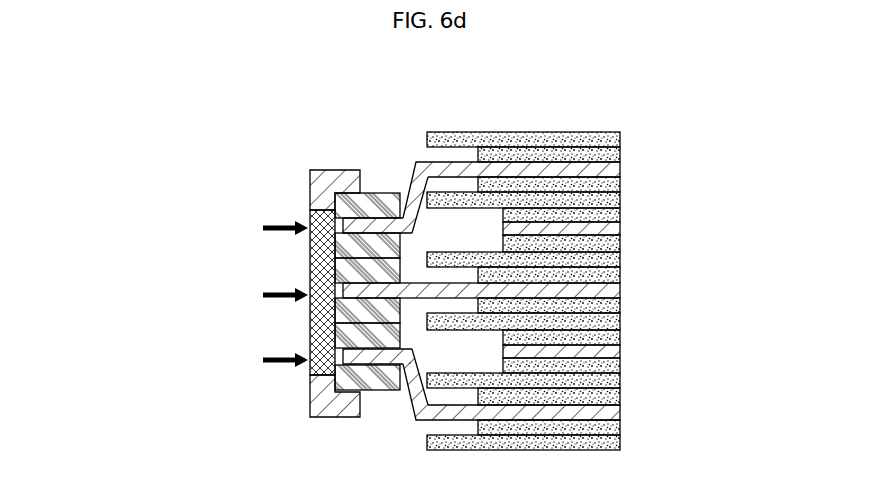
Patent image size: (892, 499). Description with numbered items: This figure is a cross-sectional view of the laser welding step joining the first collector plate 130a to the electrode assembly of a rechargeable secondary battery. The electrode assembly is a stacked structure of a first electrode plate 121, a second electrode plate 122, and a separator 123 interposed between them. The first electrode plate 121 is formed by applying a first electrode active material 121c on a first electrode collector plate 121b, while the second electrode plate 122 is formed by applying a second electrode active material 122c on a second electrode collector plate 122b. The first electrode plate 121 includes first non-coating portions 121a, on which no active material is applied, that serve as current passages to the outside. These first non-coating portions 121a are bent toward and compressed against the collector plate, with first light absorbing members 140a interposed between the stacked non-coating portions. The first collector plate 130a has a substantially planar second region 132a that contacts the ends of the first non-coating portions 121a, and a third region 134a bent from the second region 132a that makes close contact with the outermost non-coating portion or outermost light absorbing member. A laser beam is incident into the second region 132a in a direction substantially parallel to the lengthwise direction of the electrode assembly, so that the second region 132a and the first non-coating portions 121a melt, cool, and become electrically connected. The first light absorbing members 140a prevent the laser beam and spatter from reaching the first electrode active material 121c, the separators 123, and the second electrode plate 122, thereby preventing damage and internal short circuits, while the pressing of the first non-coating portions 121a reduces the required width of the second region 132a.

The first electrode plate 121 is at (624, 169).
The first non-coating portion 121a is at (410, 240).
The first electrode collector plate 121b is at (593, 143).
The first electrode active material 121c is at (563, 190).
The second electrode plate 122 is at (624, 351).
The second electrode collector plate 122b is at (607, 402).
The second electrode active material 122c is at (598, 385).
The separator 123 is at (427, 205).
The first collector plate 130a is at (277, 322).
The second region 132a is at (307, 370).
The third region 134a is at (332, 410).
The first light absorbing member 140a is at (345, 198).